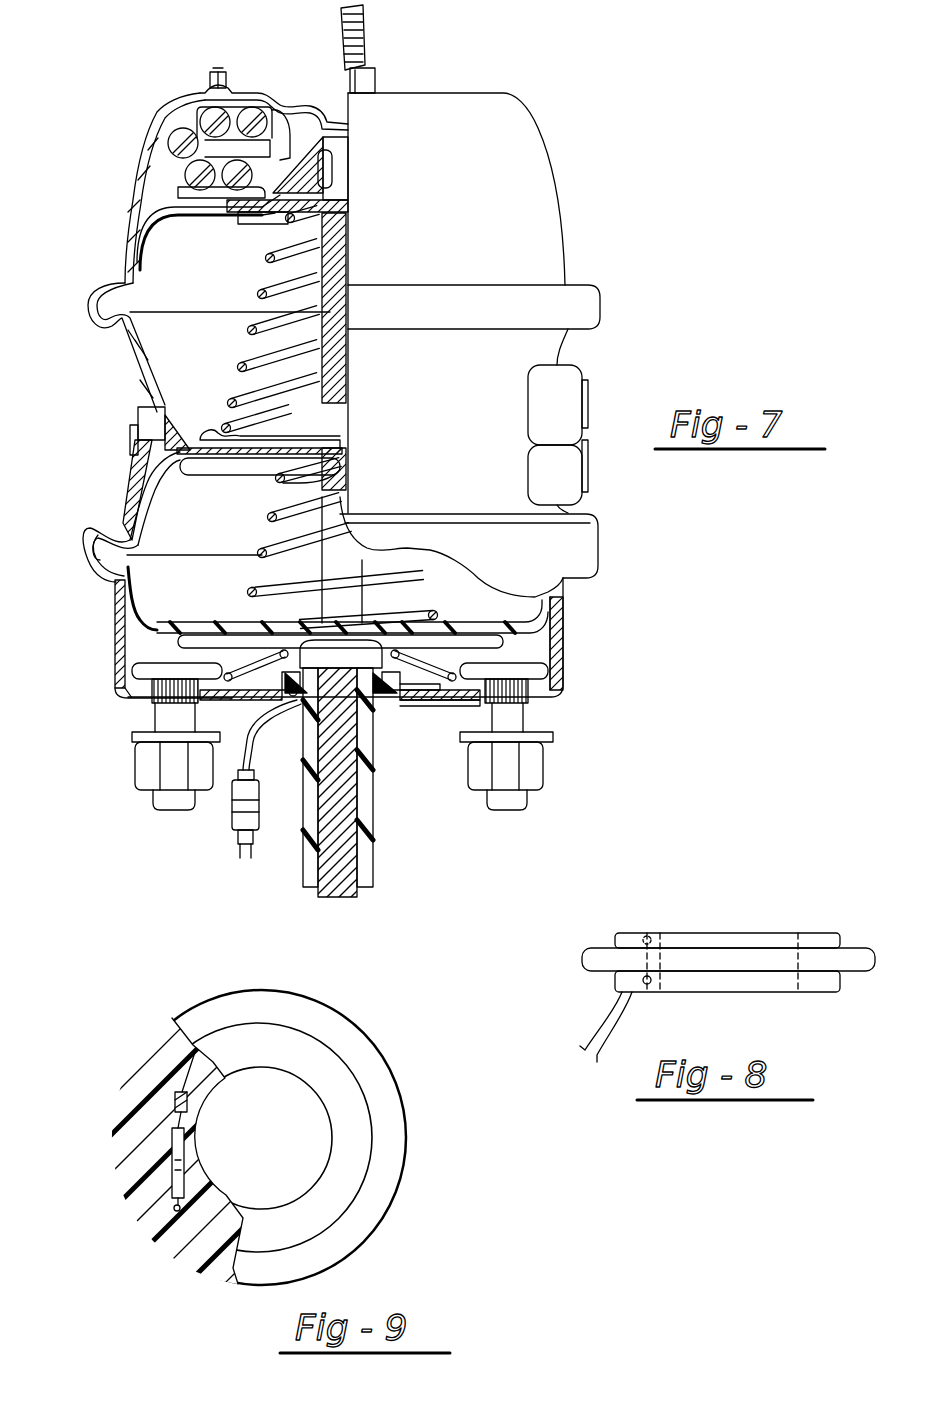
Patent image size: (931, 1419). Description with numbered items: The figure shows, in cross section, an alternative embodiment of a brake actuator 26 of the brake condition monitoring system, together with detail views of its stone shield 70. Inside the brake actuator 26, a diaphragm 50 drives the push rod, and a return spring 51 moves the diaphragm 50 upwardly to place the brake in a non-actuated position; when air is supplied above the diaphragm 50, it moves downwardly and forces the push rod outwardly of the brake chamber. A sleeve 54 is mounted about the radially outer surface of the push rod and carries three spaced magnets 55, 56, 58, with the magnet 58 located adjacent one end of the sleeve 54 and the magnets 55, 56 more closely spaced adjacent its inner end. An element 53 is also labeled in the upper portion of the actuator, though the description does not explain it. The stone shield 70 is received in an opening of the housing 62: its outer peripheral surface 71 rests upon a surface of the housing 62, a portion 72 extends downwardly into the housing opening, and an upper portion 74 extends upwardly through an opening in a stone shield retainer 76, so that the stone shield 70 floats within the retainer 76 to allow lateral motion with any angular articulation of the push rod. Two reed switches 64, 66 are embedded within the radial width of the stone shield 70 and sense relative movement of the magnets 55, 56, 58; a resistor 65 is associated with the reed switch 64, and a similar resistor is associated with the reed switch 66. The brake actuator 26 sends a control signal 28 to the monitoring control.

In FIG. 7, the brake actuator 26 is at (618, 355).
In FIG. 7, the control signal 28 is at (237, 830).
In FIG. 7, the diaphragm 50 is at (152, 517).
In FIG. 7, the return spring 51 is at (328, 288).
In FIG. 7, the coil winding 53 is at (200, 176).
In FIG. 7, the sleeve 54 is at (357, 833).
In FIG. 7, the magnet 55 is at (303, 735).
In FIG. 7, the magnet 56 is at (313, 745).
In FIG. 7, the magnet 58 is at (373, 862).
In FIG. 7, the housing 62 is at (120, 690).
In FIG. 7, the reed switch 64 is at (285, 657).
In FIG. 8, the reed switch 64 is at (648, 935).
In FIG. 9, the reed switch 64 is at (135, 1178).
In FIG. 9, the resistor 65 is at (177, 1092).
In FIG. 7, the reed switch 66 is at (290, 697).
In FIG. 8, the reed switch 66 is at (640, 981).
In FIG. 7, the stone shield 70 is at (372, 648).
In FIG. 8, the stone shield 70 is at (765, 935).
In FIG. 9, the stone shield 70 is at (135, 1088).
In FIG. 7, the outer peripheral surface 71 is at (227, 680).
In FIG. 8, the outer peripheral surface 71 is at (598, 948).
In FIG. 7, the portion 72 is at (382, 705).
In FIG. 8, the portion 72 is at (712, 985).
In FIG. 7, the upper portion 74 is at (397, 700).
In FIG. 8, the upper portion 74 is at (720, 933).
In FIG. 7, the stone shield retainer 76 is at (446, 660).